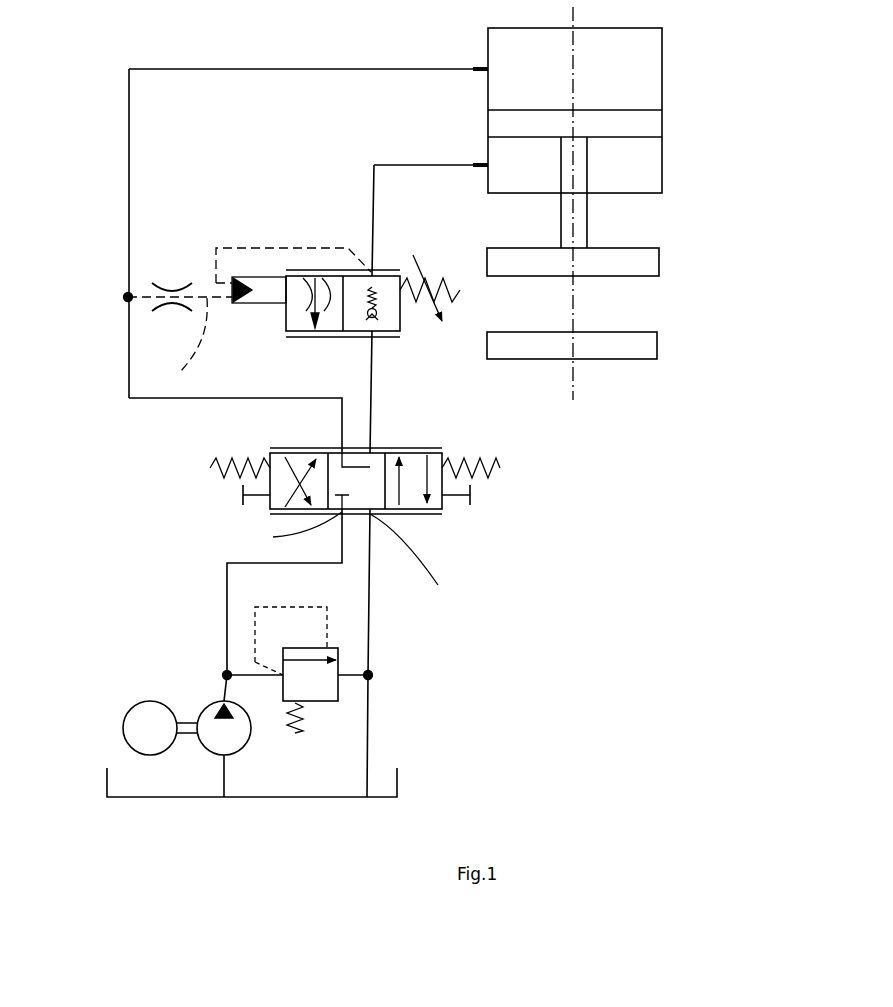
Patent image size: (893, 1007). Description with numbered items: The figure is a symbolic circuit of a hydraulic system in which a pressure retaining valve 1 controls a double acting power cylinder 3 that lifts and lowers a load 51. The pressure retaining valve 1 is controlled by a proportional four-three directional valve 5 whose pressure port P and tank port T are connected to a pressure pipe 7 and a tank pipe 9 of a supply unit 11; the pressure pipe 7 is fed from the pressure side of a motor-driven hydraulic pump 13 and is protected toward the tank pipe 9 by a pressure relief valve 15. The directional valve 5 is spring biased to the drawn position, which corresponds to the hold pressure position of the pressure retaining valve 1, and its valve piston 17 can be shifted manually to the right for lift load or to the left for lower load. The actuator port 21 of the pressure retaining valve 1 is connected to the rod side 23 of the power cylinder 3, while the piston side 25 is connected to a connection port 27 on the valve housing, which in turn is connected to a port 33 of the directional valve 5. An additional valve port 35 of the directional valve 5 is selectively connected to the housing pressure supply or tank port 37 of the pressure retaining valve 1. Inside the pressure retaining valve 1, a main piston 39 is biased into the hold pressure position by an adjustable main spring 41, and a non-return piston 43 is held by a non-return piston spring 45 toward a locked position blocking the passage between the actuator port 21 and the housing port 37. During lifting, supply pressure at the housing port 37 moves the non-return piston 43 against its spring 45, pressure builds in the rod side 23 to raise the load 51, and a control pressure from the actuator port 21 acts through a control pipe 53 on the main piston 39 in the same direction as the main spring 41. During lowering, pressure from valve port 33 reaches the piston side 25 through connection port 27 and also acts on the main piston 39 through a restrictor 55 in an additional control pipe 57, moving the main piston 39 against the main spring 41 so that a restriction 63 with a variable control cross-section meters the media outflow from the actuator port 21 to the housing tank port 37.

The pressure retaining valve 1 is at (337, 299).
The double acting power cylinder 3 is at (588, 203).
The proportional 4/3-directional valve 5 is at (370, 481).
The pressure pipe 7 is at (225, 593).
The tank pipe 9 is at (367, 621).
The supply unit 11 is at (264, 706).
The motor-driven hydraulic pump 13 is at (218, 734).
The pressure relief valve 15 is at (323, 687).
The valve piston 17 is at (387, 470).
The actuator port 21 is at (372, 275).
The rod side 23 is at (518, 163).
The piston side 25 is at (520, 88).
The connection port 27 is at (123, 295).
The valve port 33 is at (343, 452).
The additional valve port 35 is at (370, 453).
The housing port 37 is at (373, 340).
The main piston 39 is at (342, 298).
The adjustable main spring 41 is at (440, 293).
The non-return piston 43 is at (367, 312).
The non-return piston spring 45 is at (377, 302).
The load 51 is at (630, 260).
The control pipe 53 is at (268, 248).
The restrictor 55 is at (167, 288).
The additional control pipe 57 is at (191, 343).
The restriction 63 is at (290, 305).